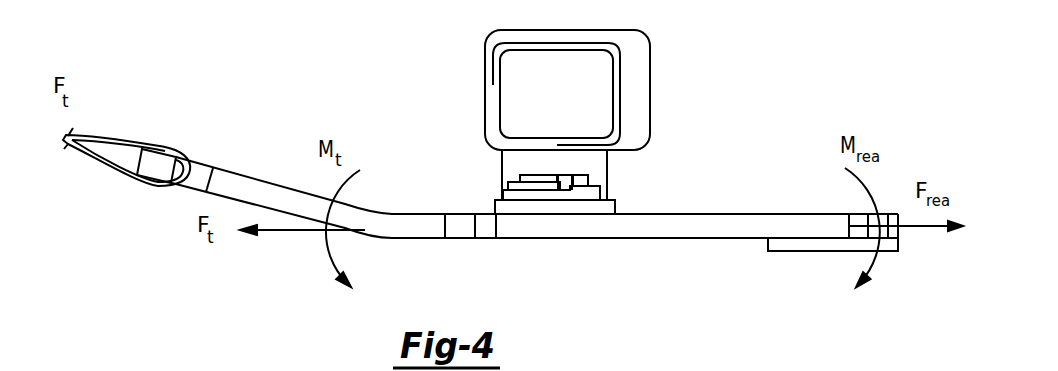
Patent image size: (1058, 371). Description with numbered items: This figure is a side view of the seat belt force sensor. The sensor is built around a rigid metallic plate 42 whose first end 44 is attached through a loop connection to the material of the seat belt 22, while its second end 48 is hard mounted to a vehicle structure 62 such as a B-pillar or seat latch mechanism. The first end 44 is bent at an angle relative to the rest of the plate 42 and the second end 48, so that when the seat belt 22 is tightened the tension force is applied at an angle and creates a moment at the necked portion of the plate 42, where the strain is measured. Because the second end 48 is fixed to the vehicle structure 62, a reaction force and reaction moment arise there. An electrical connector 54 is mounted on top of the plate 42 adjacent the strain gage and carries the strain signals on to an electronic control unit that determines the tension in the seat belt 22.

The seat belt 22 is at (148, 180).
The plate 42 is at (555, 238).
The first end 44 is at (163, 147).
The second end 48 is at (808, 214).
The electrical connector 54 is at (649, 72).
The vehicle structure 62 is at (812, 251).